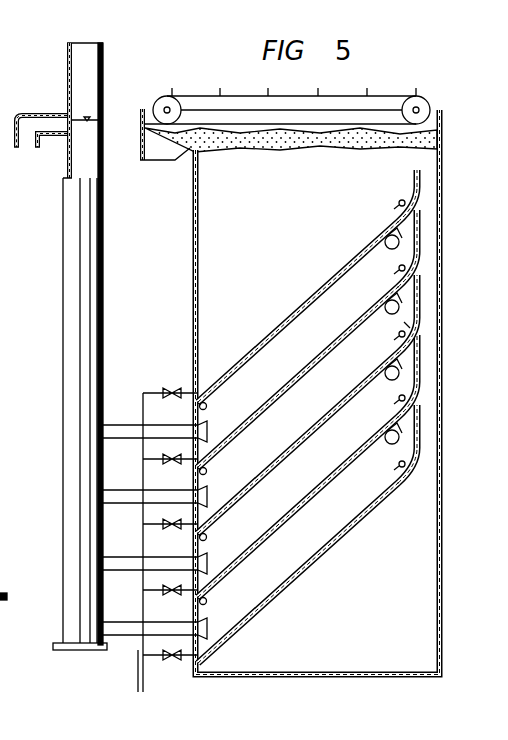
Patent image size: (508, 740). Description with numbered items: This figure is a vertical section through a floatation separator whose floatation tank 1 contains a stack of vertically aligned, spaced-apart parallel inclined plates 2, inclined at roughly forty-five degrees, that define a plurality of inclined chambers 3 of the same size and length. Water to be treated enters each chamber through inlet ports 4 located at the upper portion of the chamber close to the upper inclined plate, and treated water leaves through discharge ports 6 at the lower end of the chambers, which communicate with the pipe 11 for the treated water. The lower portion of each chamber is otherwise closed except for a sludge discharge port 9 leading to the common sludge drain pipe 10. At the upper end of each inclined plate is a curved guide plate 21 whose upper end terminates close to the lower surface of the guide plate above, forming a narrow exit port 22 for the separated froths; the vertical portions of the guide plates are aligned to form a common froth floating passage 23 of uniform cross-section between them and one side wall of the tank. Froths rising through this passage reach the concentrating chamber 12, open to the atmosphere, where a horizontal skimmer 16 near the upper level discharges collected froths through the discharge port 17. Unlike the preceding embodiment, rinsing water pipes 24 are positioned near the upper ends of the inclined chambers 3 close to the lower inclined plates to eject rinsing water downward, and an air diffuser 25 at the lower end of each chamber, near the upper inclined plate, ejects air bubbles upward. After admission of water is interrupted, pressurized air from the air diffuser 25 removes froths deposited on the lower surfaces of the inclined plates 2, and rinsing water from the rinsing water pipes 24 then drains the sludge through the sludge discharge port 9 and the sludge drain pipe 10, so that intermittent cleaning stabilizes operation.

The floatation tank 1 is at (443, 512).
The inclined plates 2 is at (276, 332).
The inclined chambers 3 is at (324, 339).
The inlet ports 4 is at (386, 248).
The discharge ports 6 is at (211, 425).
The sludge discharge port 9 is at (184, 396).
The sludge drain pipe 10 is at (138, 675).
The pipe for the treated water 11 is at (66, 517).
The concentrating chamber 12 is at (278, 160).
The horizontal skimmer 16 is at (232, 96).
The discharge port for the froths 17 is at (152, 160).
The curved guide plate 21 is at (421, 180).
The narrow exit port 22 is at (412, 208).
The common froth floating passage 23 is at (412, 320).
The rinsing water pipes 24 is at (399, 202).
The air diffuser 25 is at (208, 405).